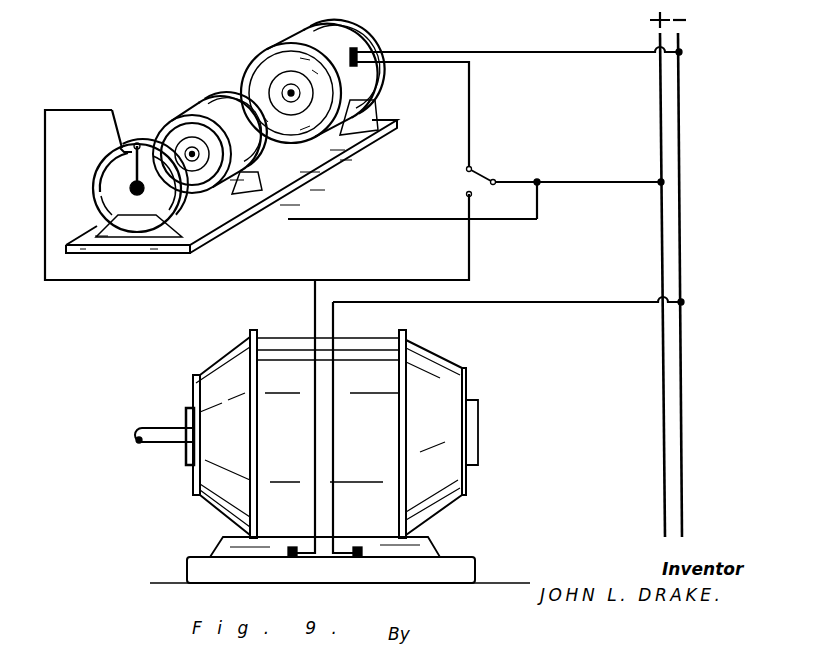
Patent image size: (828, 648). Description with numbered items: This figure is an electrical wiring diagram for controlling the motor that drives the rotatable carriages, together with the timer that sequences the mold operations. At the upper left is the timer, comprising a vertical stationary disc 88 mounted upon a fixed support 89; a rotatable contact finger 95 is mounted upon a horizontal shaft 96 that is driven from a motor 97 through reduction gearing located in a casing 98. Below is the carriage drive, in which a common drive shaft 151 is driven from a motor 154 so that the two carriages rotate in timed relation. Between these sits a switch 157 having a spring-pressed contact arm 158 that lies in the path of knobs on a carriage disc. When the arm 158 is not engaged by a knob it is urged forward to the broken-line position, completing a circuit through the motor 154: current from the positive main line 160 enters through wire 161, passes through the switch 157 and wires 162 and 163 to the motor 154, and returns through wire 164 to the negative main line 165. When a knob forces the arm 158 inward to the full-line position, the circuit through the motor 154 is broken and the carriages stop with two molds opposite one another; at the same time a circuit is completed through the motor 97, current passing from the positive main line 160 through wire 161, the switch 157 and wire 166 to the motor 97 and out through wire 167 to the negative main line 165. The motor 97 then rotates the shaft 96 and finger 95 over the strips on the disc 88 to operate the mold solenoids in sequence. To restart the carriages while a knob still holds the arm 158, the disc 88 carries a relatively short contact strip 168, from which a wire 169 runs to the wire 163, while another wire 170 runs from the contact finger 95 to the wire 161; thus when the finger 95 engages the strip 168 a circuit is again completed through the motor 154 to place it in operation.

The stationary disc 88 is at (108, 158).
The fixed support 89 is at (195, 243).
The contact finger 95 is at (140, 143).
The horizontal shaft 96 is at (322, 103).
The motor 97 is at (305, 30).
The casing 98 is at (204, 106).
The common drive shaft 151 is at (170, 428).
The motor 154 is at (200, 480).
The switch 157 is at (492, 174).
The contact arm 158 is at (466, 192).
The positive main line 160 is at (652, 236).
The wire 161 is at (612, 180).
The wire 162 is at (402, 278).
The wire 163 is at (314, 438).
The wire 164 is at (514, 306).
The negative main line 165 is at (684, 362).
The wire 166 is at (472, 86).
The wire 167 is at (548, 52).
The contact strip 168 is at (122, 148).
The wire 169 is at (112, 290).
The wire 170 is at (292, 224).